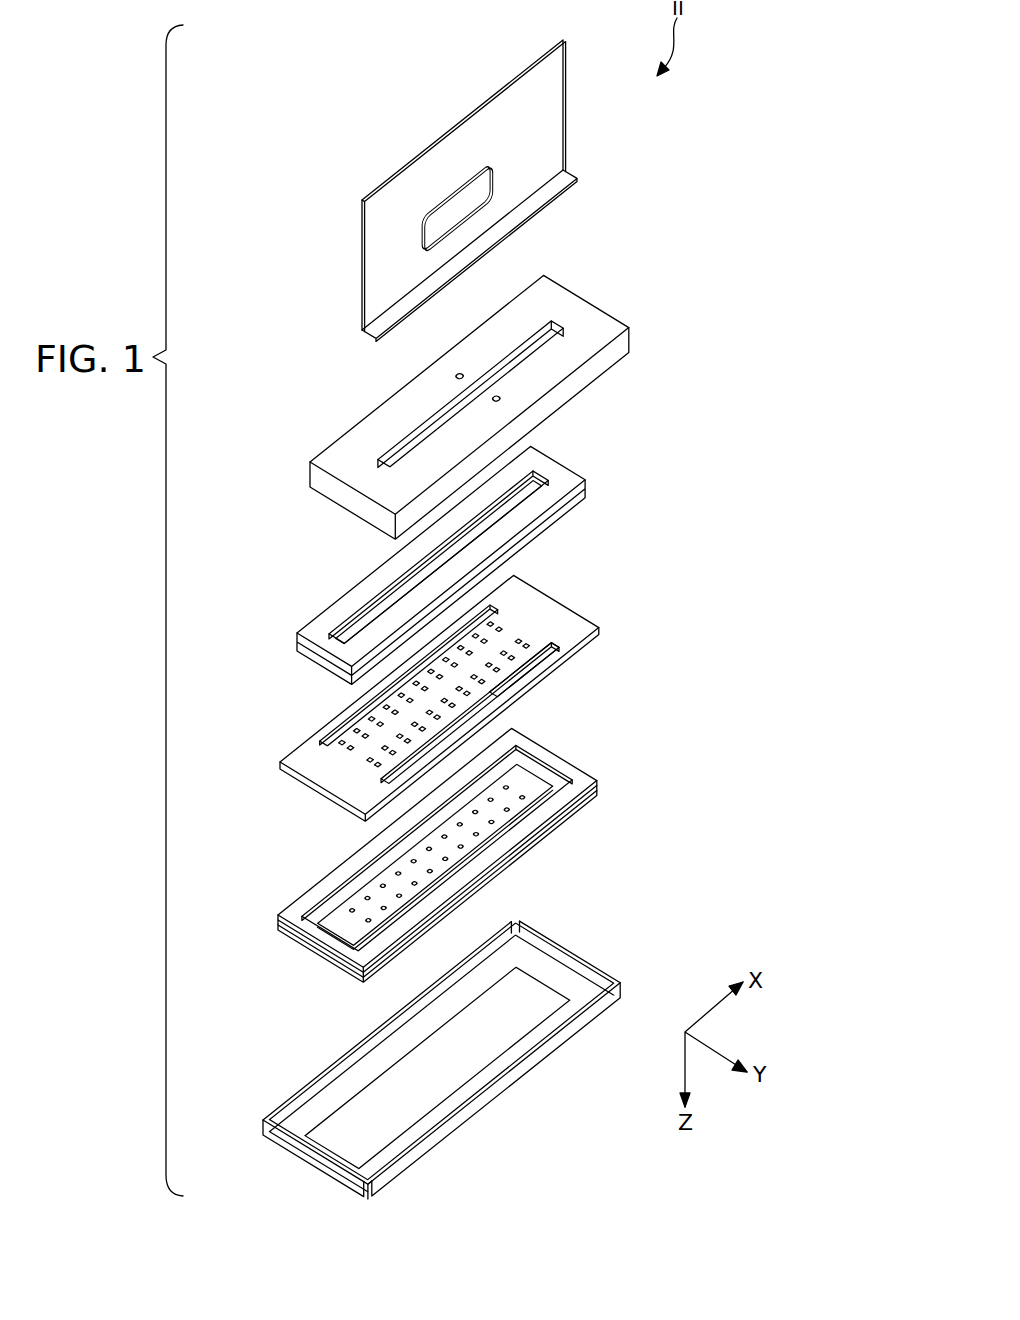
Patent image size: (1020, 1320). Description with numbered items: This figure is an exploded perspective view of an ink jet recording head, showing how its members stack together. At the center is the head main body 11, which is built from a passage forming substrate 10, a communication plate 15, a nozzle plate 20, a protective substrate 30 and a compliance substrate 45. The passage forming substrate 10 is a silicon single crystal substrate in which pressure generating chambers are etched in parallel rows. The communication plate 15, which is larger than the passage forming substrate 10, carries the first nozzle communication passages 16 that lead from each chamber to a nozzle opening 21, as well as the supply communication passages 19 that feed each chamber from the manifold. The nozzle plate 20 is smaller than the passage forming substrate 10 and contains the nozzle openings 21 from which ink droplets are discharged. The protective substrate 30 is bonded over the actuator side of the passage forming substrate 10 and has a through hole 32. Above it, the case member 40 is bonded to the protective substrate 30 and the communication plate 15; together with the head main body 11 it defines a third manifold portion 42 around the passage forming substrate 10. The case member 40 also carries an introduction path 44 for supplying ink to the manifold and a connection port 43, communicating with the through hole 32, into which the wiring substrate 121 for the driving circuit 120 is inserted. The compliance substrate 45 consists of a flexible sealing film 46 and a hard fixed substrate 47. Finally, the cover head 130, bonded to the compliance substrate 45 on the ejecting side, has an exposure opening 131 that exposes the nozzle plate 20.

The passage forming substrate 10 is at (308, 658).
The head main body 11 is at (753, 465).
The communication plate 15 is at (512, 593).
The first nozzle communication passage 16 is at (520, 637).
The supply communication passage 19 is at (540, 641).
The nozzle plate 20 is at (520, 780).
The nozzle openings 21 is at (477, 832).
The protective substrate 30 is at (547, 490).
The through hole 32 is at (490, 520).
The case member 40 is at (613, 348).
The third manifold portion 42 is at (527, 663).
The connection port 43 is at (397, 455).
The introduction path 44 is at (503, 395).
The compliance substrate 45 is at (704, 763).
The sealing film 46 is at (597, 785).
The fixed substrate 47 is at (593, 797).
The driving circuit 120 is at (433, 223).
The wiring substrate 121 is at (373, 290).
The cover head 130 is at (603, 982).
The exposure opening 131 is at (497, 1045).